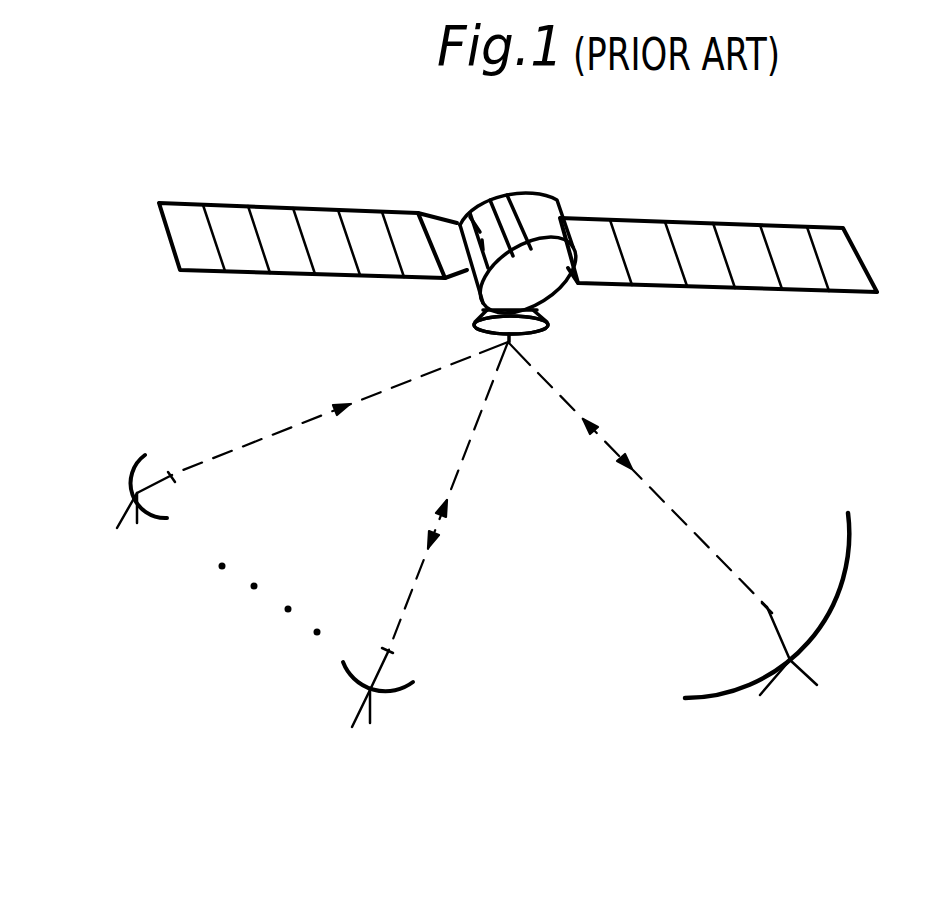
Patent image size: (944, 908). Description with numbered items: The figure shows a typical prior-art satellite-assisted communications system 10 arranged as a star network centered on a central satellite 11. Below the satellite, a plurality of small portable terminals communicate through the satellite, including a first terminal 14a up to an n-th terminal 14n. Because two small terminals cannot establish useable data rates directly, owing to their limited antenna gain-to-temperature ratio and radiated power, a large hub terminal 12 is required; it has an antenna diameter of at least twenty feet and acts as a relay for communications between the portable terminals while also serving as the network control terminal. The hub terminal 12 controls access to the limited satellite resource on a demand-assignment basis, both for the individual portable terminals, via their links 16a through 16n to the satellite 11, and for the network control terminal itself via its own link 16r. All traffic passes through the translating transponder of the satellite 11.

The system 10 is at (778, 181).
The central satellite 11 is at (557, 283).
The hub terminal 12 is at (802, 652).
The first terminal 14a is at (128, 475).
The n-th terminal 14n is at (393, 700).
The link 16a is at (327, 410).
The link 16n is at (443, 525).
The link 16r is at (605, 435).